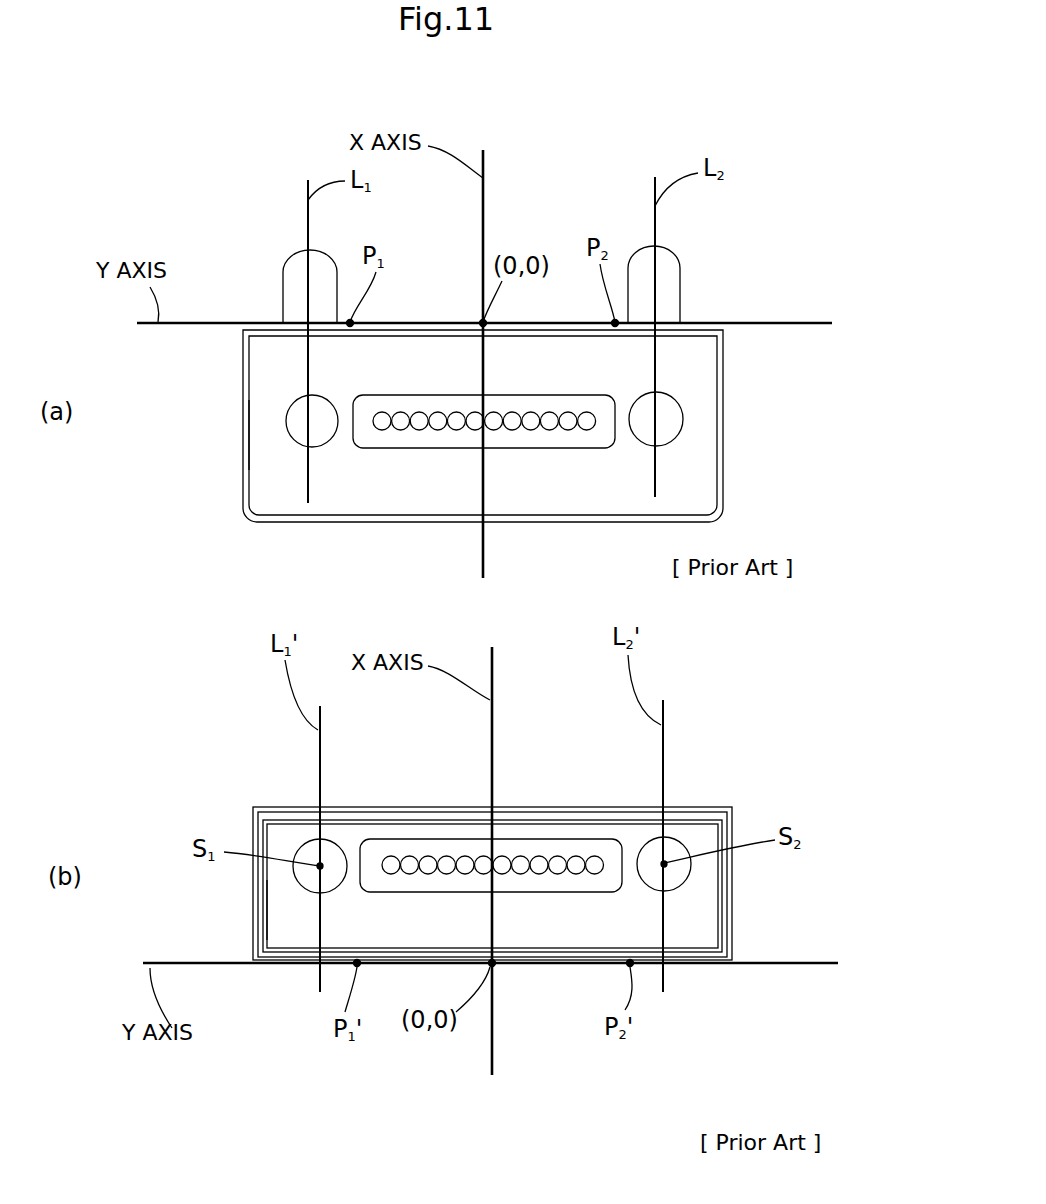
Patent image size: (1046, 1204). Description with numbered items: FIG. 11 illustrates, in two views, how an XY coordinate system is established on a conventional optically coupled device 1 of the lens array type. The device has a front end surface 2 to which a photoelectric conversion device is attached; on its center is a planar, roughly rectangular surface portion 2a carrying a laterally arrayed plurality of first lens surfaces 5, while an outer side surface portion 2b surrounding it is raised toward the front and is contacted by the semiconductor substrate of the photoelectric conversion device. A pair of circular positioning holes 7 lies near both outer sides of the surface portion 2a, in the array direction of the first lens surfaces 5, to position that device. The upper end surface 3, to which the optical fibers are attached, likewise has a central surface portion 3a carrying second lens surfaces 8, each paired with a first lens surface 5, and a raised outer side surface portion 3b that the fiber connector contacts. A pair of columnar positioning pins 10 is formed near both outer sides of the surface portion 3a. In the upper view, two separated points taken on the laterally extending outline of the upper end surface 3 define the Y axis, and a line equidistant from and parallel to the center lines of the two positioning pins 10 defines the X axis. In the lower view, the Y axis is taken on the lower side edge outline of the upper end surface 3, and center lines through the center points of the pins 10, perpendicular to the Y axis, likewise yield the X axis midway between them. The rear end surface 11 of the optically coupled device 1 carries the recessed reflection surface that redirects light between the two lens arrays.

The optically coupled device 1 is at (225, 215).
The front end surface 2 is at (274, 385).
The surface portion 2a is at (403, 448).
The outer side surface portion 2b is at (268, 447).
The upper end surface 3 is at (700, 322).
The surface portion 3a is at (410, 840).
The outer side surface portion 3b is at (288, 920).
The first lens surfaces 5 is at (587, 431).
The positioning holes 7 is at (305, 444).
The second lens surfaces 8 is at (539, 857).
The positioning pins 10 is at (283, 296).
The rear end surface 11 is at (615, 808).